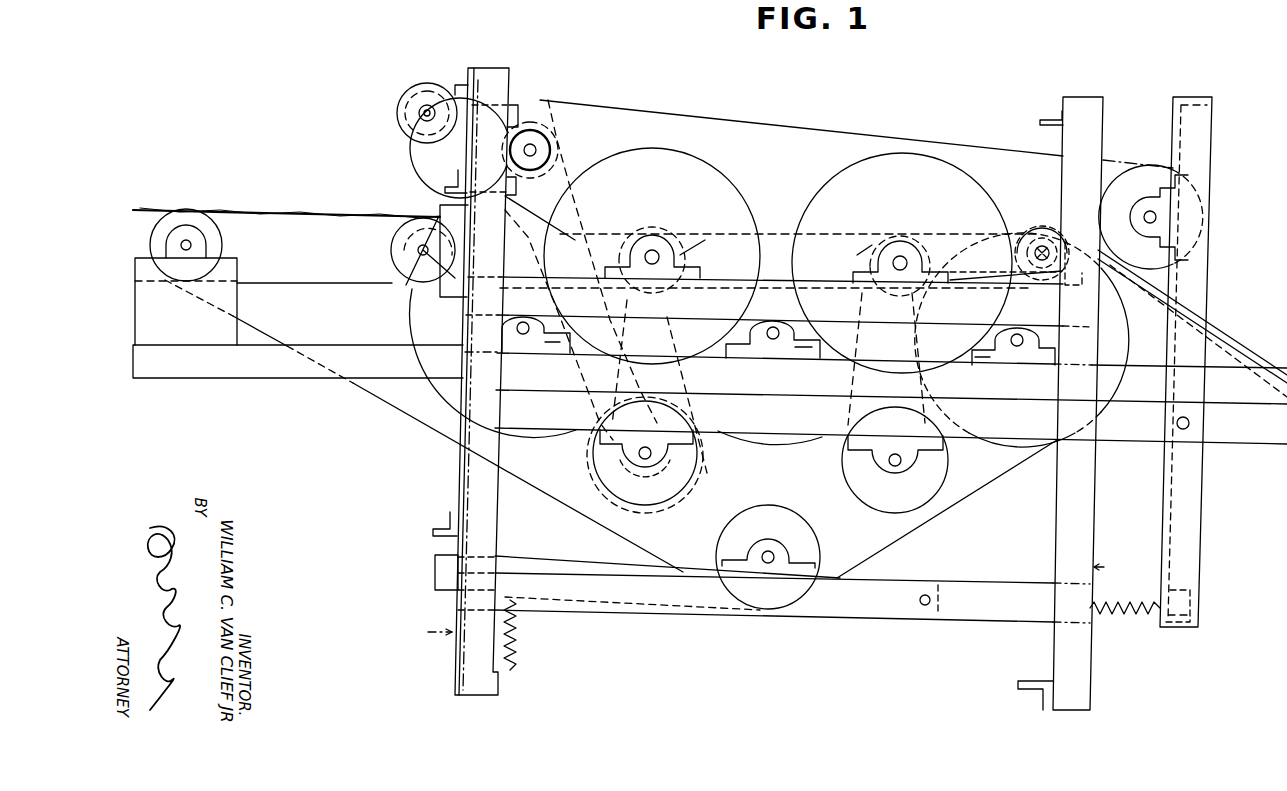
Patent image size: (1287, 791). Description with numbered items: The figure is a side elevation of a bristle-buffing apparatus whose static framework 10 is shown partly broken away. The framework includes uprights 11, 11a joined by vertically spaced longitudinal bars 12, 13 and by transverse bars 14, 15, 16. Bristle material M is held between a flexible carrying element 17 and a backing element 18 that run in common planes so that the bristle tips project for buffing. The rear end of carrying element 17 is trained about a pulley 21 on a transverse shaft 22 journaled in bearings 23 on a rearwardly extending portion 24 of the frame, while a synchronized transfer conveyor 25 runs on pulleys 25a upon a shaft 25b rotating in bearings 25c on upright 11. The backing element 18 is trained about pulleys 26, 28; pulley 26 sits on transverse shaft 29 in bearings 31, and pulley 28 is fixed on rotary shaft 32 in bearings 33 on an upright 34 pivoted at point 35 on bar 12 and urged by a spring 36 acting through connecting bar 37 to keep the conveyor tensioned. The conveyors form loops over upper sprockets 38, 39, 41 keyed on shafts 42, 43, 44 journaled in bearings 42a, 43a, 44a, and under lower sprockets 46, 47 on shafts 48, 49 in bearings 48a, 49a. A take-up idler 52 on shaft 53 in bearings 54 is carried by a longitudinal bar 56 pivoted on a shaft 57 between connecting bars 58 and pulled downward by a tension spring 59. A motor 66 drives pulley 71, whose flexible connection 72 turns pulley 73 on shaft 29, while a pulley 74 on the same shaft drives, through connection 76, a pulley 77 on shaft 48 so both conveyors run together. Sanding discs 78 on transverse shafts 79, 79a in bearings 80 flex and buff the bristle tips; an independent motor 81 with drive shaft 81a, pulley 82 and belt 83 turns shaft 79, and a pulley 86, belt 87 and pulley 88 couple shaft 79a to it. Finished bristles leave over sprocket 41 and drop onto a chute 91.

The framework 10 is at (767, 599).
The upright 11 is at (511, 78).
The upright 11a is at (1103, 110).
The longitudinal bar 12 is at (972, 398).
The longitudinal bar 13 is at (940, 324).
The transverse bar 14 is at (500, 685).
The transverse bar 15 is at (440, 530).
The transverse bar 16 is at (448, 186).
The carrying element 17 is at (440, 437).
The backing element 18 is at (845, 132).
The pulley or sprocket 21 is at (222, 237).
The transverse shaft 22 is at (187, 240).
The bearing 23 is at (212, 252).
The rearwardly extending portion 24 is at (293, 380).
The transfer conveyor 25 is at (150, 210).
The sprocket or pulley 25a is at (392, 242).
The shaft 25b is at (418, 252).
The bearing 25c is at (420, 280).
The pulley or sprocket 26 is at (582, 136).
The pulley or sprocket 28 is at (1118, 172).
The transverse shaft 29 is at (536, 146).
The bearing 31 is at (552, 150).
The rotary shaft 32 is at (1158, 217).
The bearing 33 is at (1148, 242).
The upright 34 is at (1212, 120).
The pivot point 35 is at (1190, 423).
The spring 36 is at (1123, 614).
The connecting bar 37 is at (1190, 608).
The upper sprocket gear 38 is at (411, 327).
The upper sprocket gear 39 is at (752, 444).
The upper sprocket gear 41 is at (985, 447).
The shaft 42 is at (522, 336).
The bearing 42a is at (555, 352).
The shaft 43 is at (773, 340).
The bearing 43a is at (810, 357).
The shaft 44 is at (1017, 347).
The bearing 44a is at (978, 361).
The lower sprocket 46 is at (593, 468).
The lower sprocket 47 is at (843, 472).
The shaft 48 is at (648, 461).
The bearing 48a is at (683, 455).
The shaft 49 is at (895, 467).
The bearing 49a is at (848, 444).
The take-up idler 52 is at (818, 545).
The transverse shaft 53 is at (768, 551).
The bearing 54 is at (745, 560).
The longitudinal bar 56 is at (572, 562).
The shaft 57 is at (931, 601).
The connecting bar 58 is at (983, 622).
The tension spring 59 is at (518, 640).
The motor 66 is at (407, 122).
The pulley or sprocket 71 is at (405, 102).
The flexible driving connection 72 is at (462, 98).
The pulley 73 is at (540, 137).
The pulley 74 is at (555, 150).
The flexible connection 76 is at (576, 196).
The pulley 77 is at (614, 429).
The sanding disc 78 is at (805, 205).
The transverse shaft 79 is at (902, 256).
The transverse shaft 79a is at (652, 250).
The bearing 80 is at (672, 248).
The motor 81 is at (1044, 228).
The drive shaft 81a is at (1027, 238).
The pulley 82 is at (1032, 270).
The flexible driving member 83 is at (981, 284).
The pulley 86 is at (860, 250).
The flexible driving connection 87 is at (722, 290).
The pulley 88 is at (685, 250).
The chute 91 is at (1232, 338).
The bristle material M is at (308, 210).